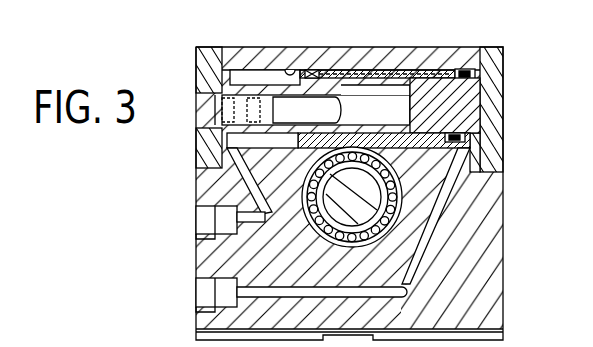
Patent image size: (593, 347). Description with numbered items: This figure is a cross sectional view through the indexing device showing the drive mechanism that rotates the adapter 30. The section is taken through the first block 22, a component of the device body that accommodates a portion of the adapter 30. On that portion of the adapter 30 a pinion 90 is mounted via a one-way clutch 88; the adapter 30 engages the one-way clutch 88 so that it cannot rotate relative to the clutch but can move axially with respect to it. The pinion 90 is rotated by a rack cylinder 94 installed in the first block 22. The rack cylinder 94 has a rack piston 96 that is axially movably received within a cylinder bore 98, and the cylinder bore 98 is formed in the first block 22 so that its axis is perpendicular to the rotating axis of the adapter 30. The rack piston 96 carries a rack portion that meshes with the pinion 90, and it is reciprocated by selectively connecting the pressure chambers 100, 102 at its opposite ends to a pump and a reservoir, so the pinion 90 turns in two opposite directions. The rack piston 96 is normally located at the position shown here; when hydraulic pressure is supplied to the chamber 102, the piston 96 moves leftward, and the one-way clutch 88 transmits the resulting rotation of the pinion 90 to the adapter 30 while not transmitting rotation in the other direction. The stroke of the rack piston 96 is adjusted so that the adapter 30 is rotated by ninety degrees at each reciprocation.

The first block 22 is at (478, 291).
The adapter 30 is at (362, 217).
The one-way clutch 88 is at (387, 226).
The pinion 90 is at (390, 186).
The rack cylinder 94 is at (420, 60).
The rack piston 96 is at (452, 127).
The cylinder bore 98 is at (288, 69).
The pressure chamber 100 is at (244, 73).
The pressure chamber 102 is at (480, 72).